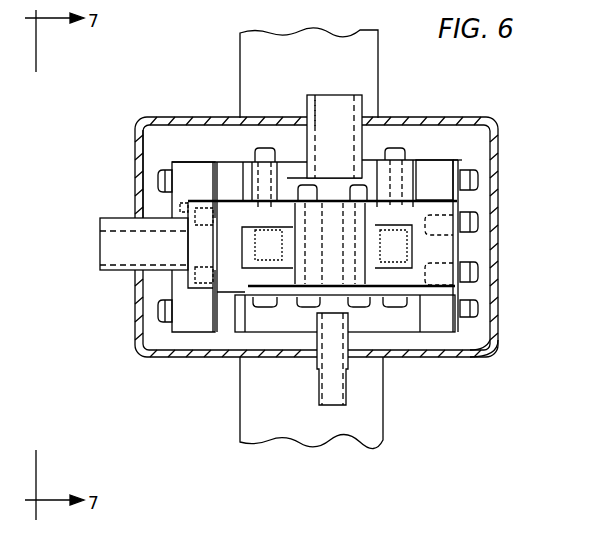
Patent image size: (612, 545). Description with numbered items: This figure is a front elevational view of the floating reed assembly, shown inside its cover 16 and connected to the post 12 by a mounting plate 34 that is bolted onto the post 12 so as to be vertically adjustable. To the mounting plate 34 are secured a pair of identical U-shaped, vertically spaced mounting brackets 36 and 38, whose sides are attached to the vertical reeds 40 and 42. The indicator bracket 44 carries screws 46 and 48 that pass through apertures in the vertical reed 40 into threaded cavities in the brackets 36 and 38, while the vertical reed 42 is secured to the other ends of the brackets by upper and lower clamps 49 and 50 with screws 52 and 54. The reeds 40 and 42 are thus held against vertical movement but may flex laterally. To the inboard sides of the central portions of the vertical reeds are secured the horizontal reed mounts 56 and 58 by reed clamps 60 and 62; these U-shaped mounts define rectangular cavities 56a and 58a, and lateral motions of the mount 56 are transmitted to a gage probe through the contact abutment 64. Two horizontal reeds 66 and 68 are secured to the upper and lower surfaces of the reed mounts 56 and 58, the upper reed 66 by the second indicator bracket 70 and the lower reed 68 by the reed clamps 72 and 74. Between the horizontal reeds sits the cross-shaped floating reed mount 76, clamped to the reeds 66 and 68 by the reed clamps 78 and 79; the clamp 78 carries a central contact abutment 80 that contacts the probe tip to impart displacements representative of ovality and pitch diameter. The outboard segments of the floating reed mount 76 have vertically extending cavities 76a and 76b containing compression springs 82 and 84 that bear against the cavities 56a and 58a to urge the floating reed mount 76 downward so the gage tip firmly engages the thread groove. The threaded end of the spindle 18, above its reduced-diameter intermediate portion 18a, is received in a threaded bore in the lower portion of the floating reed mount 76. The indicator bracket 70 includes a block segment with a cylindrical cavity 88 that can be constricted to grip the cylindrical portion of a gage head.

The post 12 is at (256, 63).
The cover 16 is at (493, 125).
The spindle 18 is at (330, 384).
The intermediate portion 18a is at (334, 308).
The mounting plate 34 is at (150, 160).
The mounting bracket 36 is at (440, 178).
The mounting bracket 38 is at (235, 325).
The vertical reed 40 is at (203, 202).
The vertical reed 42 is at (483, 358).
The indicator bracket 44 is at (116, 250).
The screw 46 is at (165, 172).
The screw 48 is at (165, 310).
The upper clamp 49 is at (469, 167).
The lower clamp 50 is at (466, 318).
The screw 52 is at (478, 180).
The screw 54 is at (470, 316).
The horizontal reed mount 56 is at (240, 268).
The rectangular cavity 56a is at (193, 301).
The horizontal reed mount 58 is at (456, 302).
The rectangular cavity 58a is at (420, 266).
The reed clamp 60 is at (208, 226).
The reed clamp 62 is at (466, 272).
The contact abutment 64 is at (200, 248).
The horizontal reed 66 is at (427, 163).
The horizontal reed 68 is at (304, 307).
The indicator bracket 70 is at (344, 105).
The reed clamp 72 is at (272, 307).
The reed clamp 74 is at (412, 307).
The floating reed mount 76 is at (274, 160).
The cavity 76a is at (158, 180).
The cavity 76b is at (455, 228).
The reed clamp 78 is at (377, 175).
The reed clamp 79 is at (380, 307).
The contact abutment 80 is at (340, 193).
The compression spring 82 is at (187, 209).
The compression spring 84 is at (466, 212).
The cylindrical cavity 88 is at (318, 102).